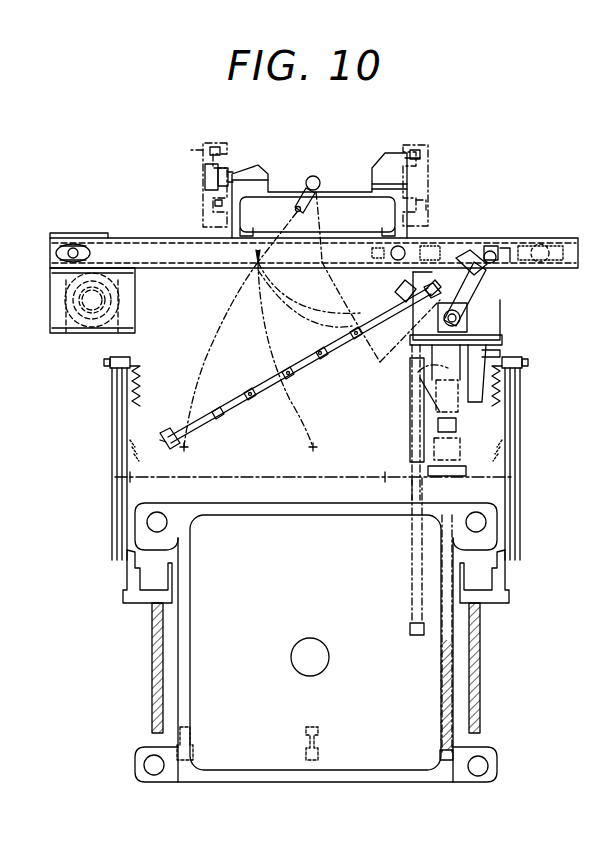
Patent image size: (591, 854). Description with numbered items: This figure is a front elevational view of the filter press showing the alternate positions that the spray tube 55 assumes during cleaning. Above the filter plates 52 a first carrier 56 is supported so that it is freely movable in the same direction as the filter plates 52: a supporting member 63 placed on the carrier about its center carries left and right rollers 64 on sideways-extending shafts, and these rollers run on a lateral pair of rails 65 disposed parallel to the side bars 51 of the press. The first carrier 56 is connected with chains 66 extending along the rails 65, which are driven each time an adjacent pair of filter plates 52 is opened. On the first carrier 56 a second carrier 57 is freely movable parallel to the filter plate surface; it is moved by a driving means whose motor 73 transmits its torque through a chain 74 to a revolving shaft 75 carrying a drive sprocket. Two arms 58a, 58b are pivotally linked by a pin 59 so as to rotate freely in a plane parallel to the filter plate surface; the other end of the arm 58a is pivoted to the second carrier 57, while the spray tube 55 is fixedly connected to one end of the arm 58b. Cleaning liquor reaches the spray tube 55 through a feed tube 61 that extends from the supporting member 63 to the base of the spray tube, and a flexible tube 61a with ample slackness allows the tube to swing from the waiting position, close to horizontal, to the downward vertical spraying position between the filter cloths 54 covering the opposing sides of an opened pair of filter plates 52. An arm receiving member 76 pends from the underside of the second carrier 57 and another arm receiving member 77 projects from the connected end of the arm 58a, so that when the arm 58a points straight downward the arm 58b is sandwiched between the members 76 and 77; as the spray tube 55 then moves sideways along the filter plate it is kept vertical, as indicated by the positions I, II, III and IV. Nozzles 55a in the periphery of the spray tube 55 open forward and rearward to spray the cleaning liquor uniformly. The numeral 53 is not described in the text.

The side bars 51 is at (152, 668).
The filter plates 52 is at (175, 550).
The guide post 53 is at (113, 434).
The filter cloths 54 is at (287, 476).
The spray tube 55 is at (298, 356).
The nozzles 55a is at (216, 416).
The first carrier 56 is at (163, 236).
The second carrier 57 is at (503, 332).
The arm 58a is at (475, 292).
The arm 58b is at (482, 270).
The pin 59 is at (490, 262).
The feed tube 61 is at (320, 178).
The flexible tube 61a is at (396, 300).
The supporting member 63 is at (292, 194).
The rollers 64 is at (226, 172).
The rails 65 is at (203, 165).
The chains 66 is at (213, 150).
The motor 73 is at (118, 305).
The chain 74 is at (66, 287).
The revolving shaft 75 is at (78, 240).
The arm receiving member 76 is at (482, 368).
The arm receiving member 77 is at (506, 262).
The spray tube position I is at (408, 536).
The spray tube position II is at (440, 676).
The spray tube position III is at (318, 736).
The spray tube position IV is at (190, 742).